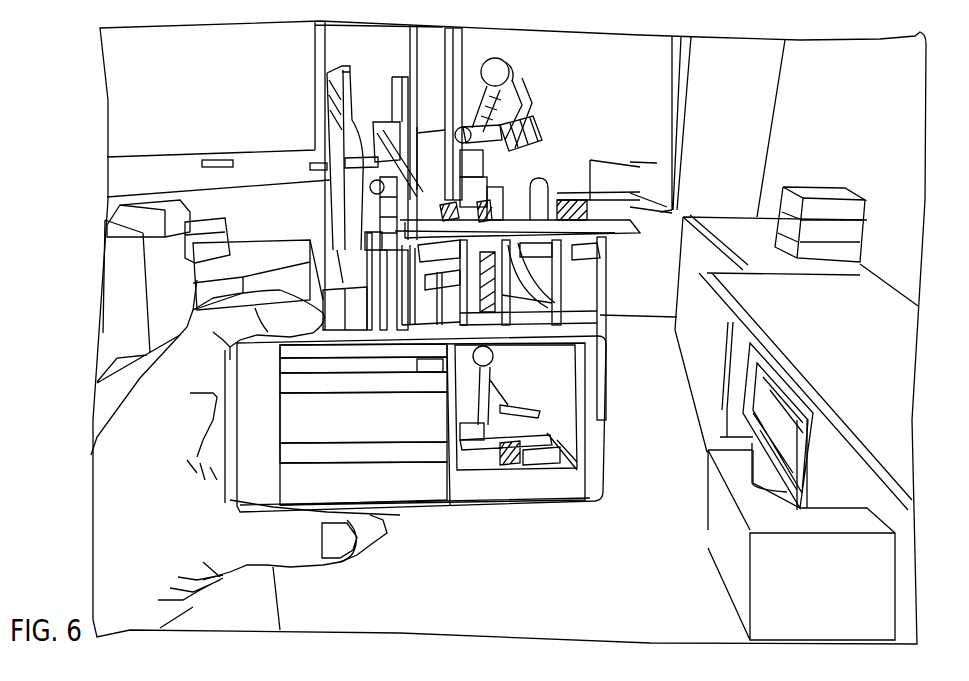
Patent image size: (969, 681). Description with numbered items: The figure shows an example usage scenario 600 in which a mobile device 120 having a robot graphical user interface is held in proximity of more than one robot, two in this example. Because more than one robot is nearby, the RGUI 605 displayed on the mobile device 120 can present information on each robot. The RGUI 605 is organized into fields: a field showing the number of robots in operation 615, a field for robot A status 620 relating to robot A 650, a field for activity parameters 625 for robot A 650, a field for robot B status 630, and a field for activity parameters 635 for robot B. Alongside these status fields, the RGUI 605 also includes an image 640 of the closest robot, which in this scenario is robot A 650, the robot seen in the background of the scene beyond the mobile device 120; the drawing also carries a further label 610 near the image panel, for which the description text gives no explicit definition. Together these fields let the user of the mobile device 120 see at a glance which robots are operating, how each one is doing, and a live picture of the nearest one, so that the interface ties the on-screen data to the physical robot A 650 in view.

The usage scenario 600 is at (63, 97).
The robot A 650 is at (533, 167).
The mobile device 120 is at (210, 462).
The RGUI 605 is at (288, 350).
The robot A status 620 is at (427, 373).
The number of robots in operation 615 is at (288, 373).
The activity parameters for robot A 625 is at (417, 448).
The robot B status 630 is at (430, 425).
The activity parameters for robot B 635 is at (417, 490).
The image of the closest robot 640 is at (557, 355).
The robot image 610 is at (430, 345).